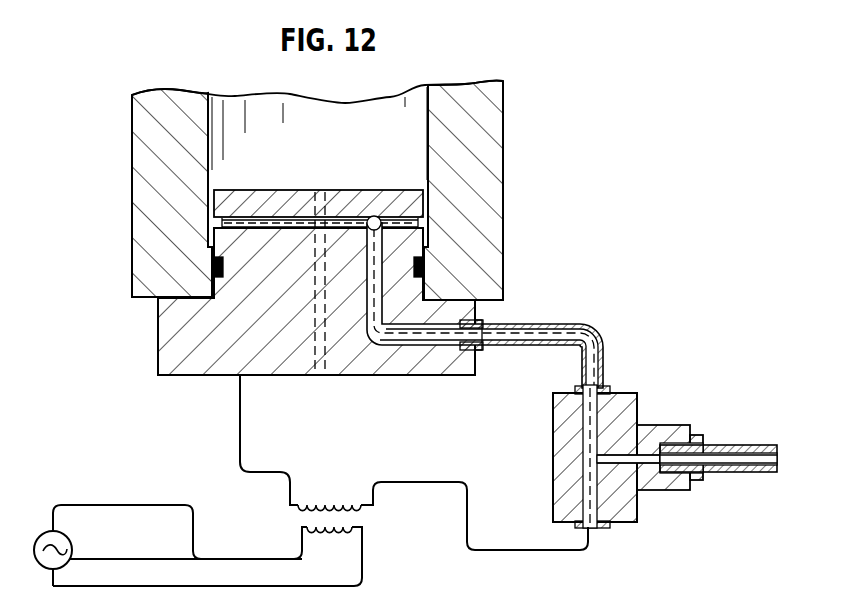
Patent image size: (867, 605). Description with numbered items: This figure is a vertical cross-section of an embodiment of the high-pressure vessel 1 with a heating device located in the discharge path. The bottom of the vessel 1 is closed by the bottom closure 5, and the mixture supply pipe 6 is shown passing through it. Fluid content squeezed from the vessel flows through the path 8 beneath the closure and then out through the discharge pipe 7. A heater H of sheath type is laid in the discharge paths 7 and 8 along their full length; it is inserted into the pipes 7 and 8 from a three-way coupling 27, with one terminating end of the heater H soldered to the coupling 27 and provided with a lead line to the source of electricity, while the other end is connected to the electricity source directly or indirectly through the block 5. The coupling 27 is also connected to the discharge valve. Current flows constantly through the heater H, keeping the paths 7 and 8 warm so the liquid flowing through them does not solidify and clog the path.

The vessel 1 is at (482, 137).
The bottom closure 5 is at (183, 376).
The mixture supply pipe 6 is at (313, 352).
The discharge pipe 7 is at (433, 341).
The path 8 is at (277, 229).
The heater H is at (567, 326).
The three-way coupling 27 is at (622, 407).